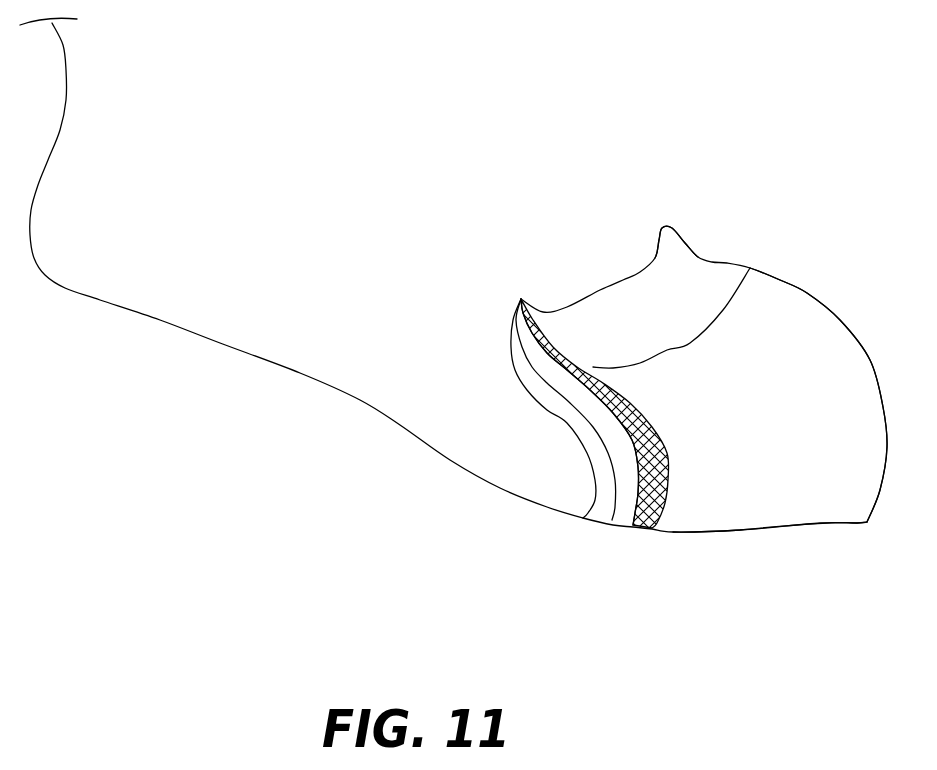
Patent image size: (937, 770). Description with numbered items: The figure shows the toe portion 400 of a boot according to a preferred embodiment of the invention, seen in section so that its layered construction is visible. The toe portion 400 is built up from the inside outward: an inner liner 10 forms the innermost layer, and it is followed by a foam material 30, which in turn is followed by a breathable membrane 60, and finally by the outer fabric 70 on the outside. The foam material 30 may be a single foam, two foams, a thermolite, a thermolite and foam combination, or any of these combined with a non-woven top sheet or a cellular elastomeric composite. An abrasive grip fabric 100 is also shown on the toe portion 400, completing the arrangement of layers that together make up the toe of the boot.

The inner liner 10 is at (546, 401).
The foam material 30 is at (625, 502).
The breathable membrane 60 is at (669, 484).
The outer fabric 70 is at (788, 483).
The abrasive grip fabric 100 is at (708, 258).
The toe portion 400 is at (798, 285).